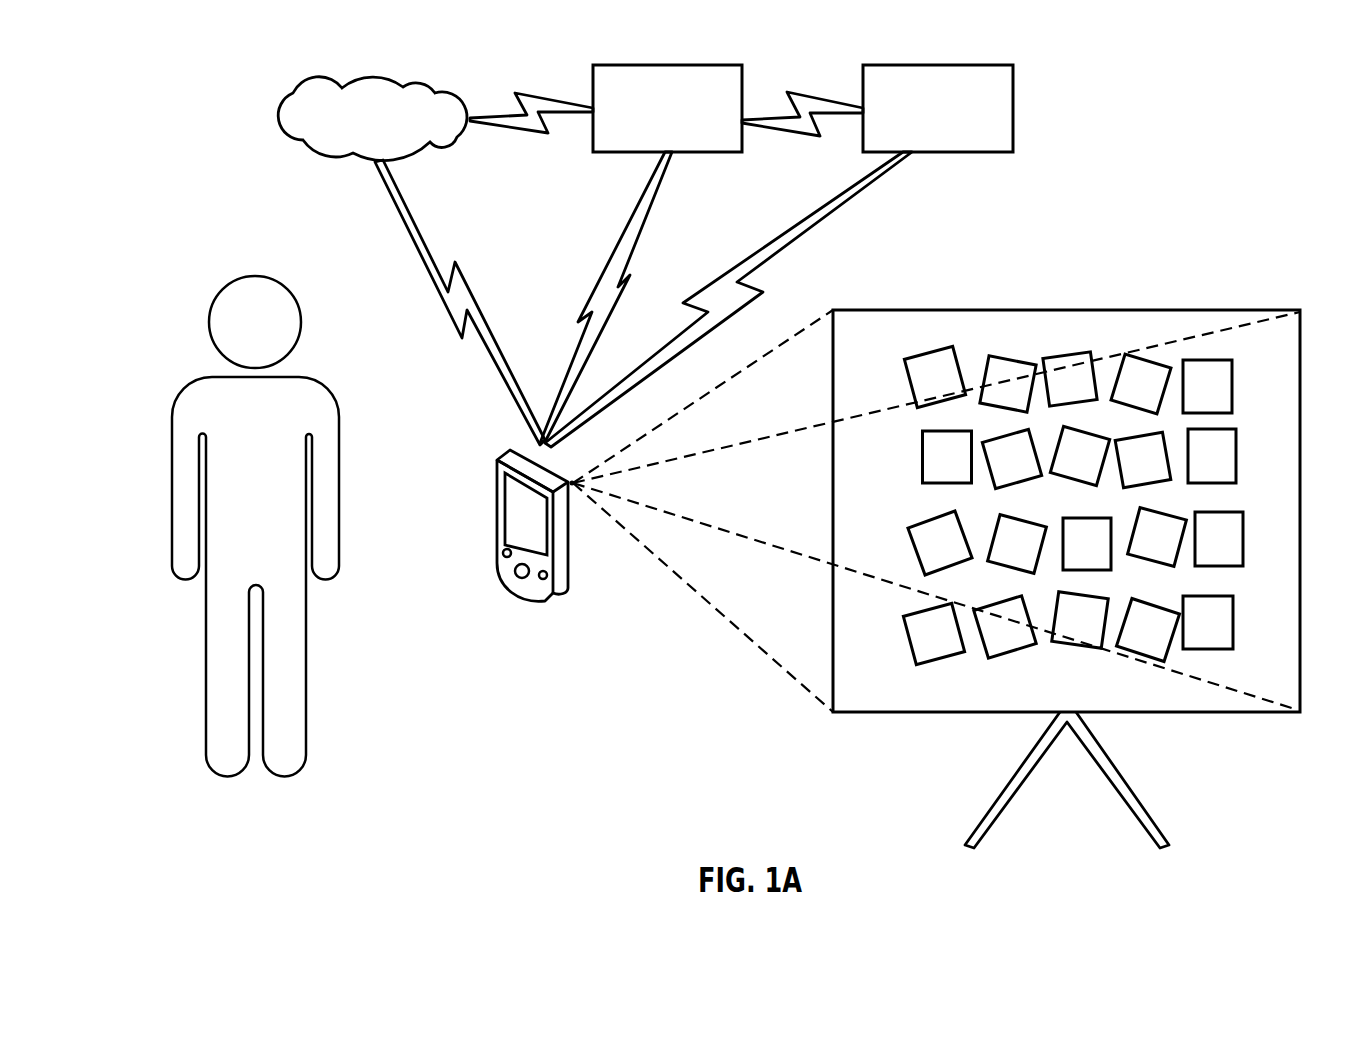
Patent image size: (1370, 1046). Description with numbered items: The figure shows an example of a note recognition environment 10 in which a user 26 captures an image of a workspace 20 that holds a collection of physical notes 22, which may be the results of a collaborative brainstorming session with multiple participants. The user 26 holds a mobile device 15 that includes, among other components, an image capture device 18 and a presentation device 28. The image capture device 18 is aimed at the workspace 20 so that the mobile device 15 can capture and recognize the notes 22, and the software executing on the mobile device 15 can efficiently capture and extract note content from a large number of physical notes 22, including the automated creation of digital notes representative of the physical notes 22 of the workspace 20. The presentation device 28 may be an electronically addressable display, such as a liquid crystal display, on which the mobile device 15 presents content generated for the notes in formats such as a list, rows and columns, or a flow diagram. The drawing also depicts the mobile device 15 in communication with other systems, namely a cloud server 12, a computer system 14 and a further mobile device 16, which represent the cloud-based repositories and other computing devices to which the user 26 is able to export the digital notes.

The note recognition environment 10 is at (212, 76).
The cloud server 12 is at (334, 86).
The computer system 14 is at (667, 65).
The mobile device 15 is at (506, 513).
The mobile device 16 is at (938, 65).
The image capture device 18 is at (543, 463).
The workspace 20 is at (1096, 563).
The notes 22 is at (1242, 387).
The user 26 is at (340, 508).
The presentation device 28 is at (518, 517).